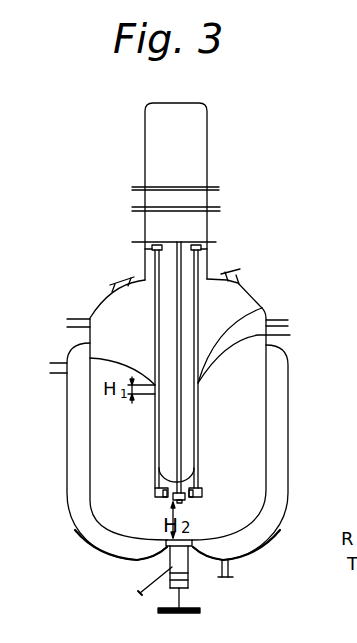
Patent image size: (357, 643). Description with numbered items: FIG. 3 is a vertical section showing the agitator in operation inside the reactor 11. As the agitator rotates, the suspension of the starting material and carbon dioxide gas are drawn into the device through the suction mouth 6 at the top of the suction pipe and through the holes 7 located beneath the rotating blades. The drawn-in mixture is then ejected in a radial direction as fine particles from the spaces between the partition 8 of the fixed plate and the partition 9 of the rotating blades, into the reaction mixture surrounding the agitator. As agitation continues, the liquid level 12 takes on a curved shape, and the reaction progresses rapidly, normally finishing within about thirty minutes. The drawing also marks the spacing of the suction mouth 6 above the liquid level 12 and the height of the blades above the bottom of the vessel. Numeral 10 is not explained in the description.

The suction mouth 6 is at (262, 308).
The holes 7 is at (173, 502).
The partition 8 is at (203, 493).
The partition 9 is at (197, 495).
The inlet nozzle 10 is at (100, 300).
The reactor 11 is at (290, 335).
The liquid level 12 is at (233, 273).